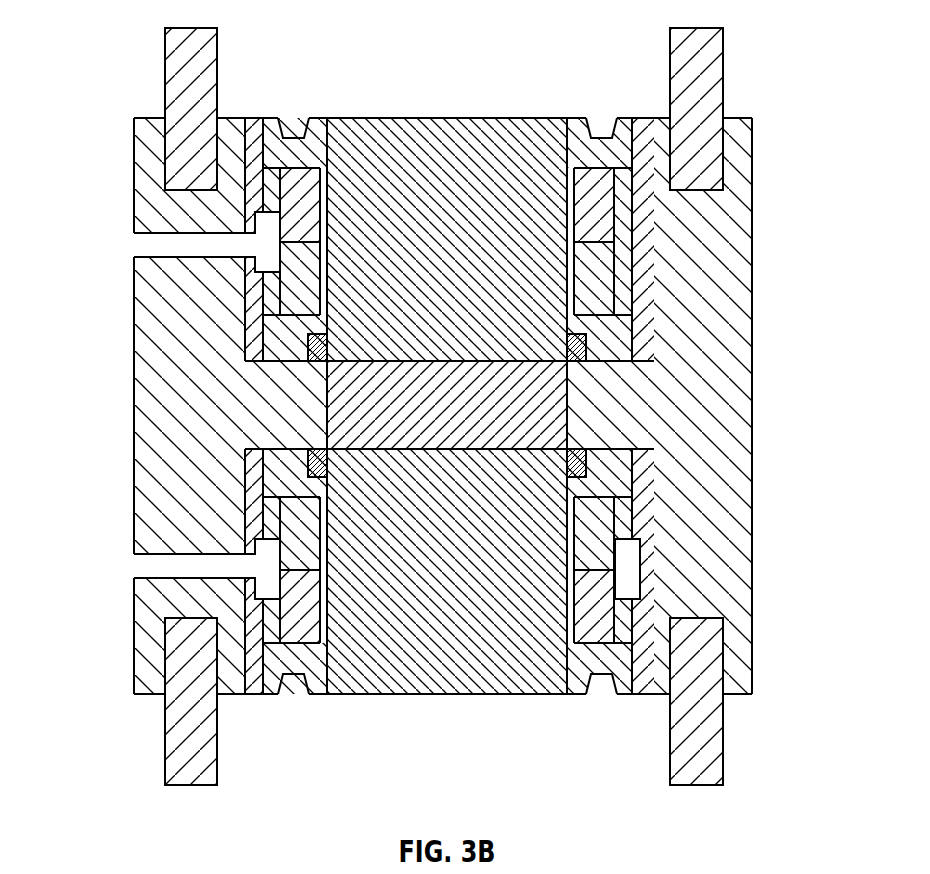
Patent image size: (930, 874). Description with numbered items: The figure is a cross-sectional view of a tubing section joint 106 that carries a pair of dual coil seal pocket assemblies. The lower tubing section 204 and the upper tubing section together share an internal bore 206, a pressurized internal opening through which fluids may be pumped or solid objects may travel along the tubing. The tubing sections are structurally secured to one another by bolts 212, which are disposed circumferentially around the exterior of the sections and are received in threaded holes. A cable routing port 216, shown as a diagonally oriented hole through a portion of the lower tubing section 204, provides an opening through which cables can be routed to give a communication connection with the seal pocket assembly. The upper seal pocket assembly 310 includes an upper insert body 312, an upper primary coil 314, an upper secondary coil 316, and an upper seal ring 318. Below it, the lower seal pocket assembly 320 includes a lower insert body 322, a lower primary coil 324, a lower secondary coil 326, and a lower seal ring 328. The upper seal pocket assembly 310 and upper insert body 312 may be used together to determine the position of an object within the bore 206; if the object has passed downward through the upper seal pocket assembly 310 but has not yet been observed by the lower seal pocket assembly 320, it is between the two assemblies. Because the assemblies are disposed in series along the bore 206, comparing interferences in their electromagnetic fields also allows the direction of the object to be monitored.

The tubing section joint 106 is at (421, 397).
The lower tubing section 204 is at (133, 394).
The internal bore 206 is at (467, 118).
The bolts 212 is at (164, 83).
The cable routing port 216 is at (147, 247).
The upper seal pocket assembly 310 is at (598, 121).
The upper insert body 312 is at (653, 138).
The upper primary coil 314 is at (612, 223).
The upper secondary coil 316 is at (612, 290).
The upper seal ring 318 is at (595, 355).
The lower seal pocket assembly 320 is at (607, 694).
The lower insert body 322 is at (633, 487).
The lower primary coil 324 is at (615, 535).
The lower secondary coil 326 is at (615, 602).
The lower seal ring 328 is at (586, 456).